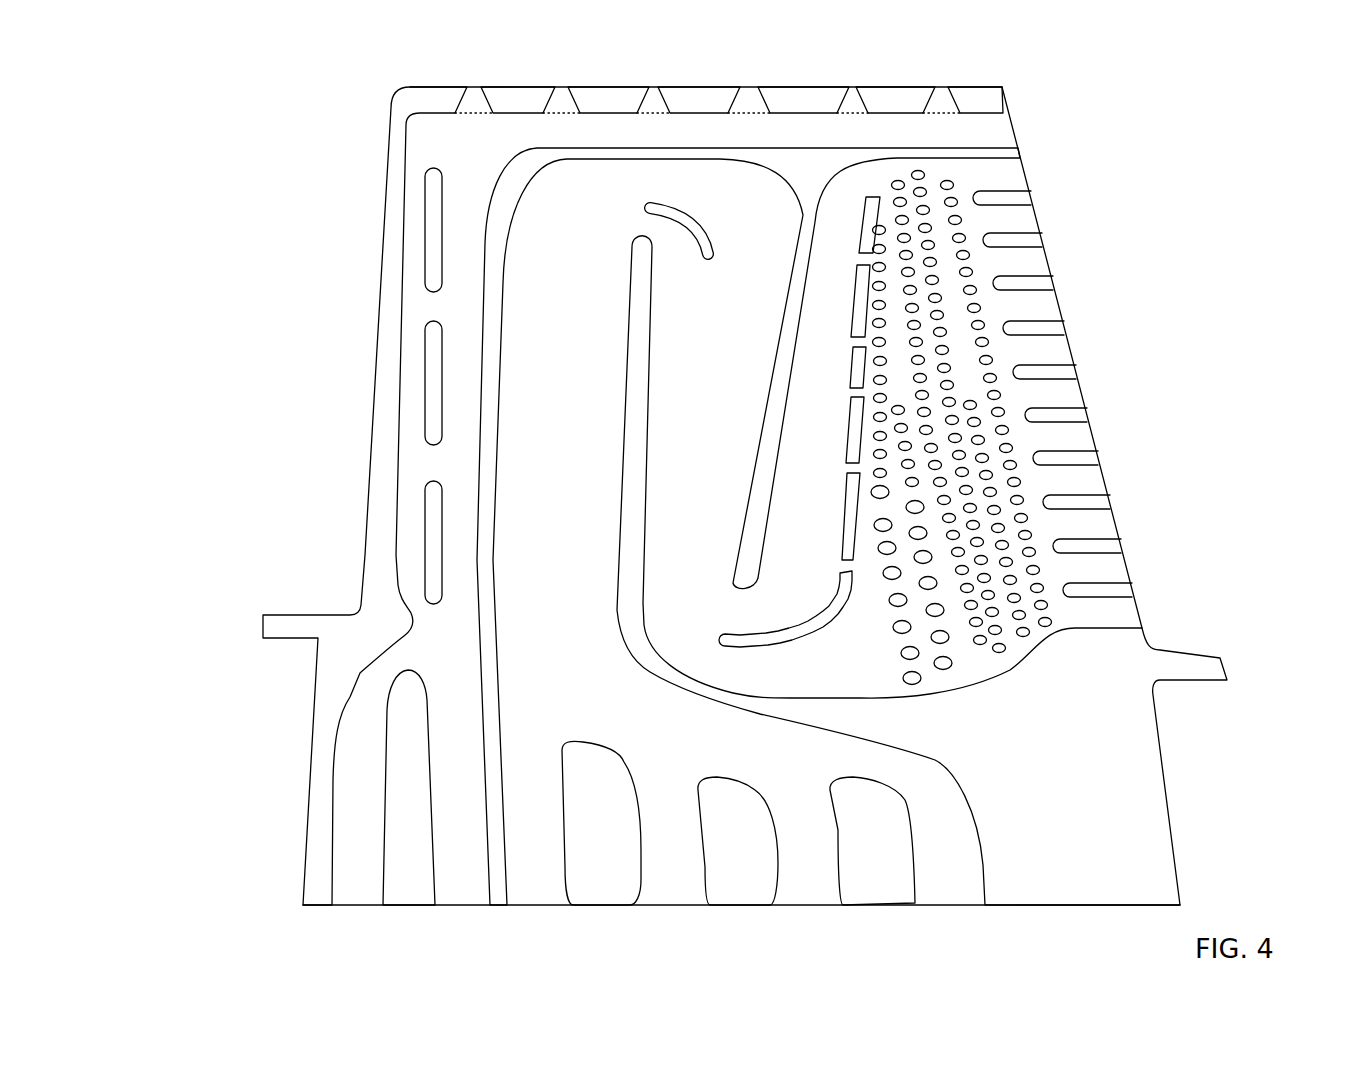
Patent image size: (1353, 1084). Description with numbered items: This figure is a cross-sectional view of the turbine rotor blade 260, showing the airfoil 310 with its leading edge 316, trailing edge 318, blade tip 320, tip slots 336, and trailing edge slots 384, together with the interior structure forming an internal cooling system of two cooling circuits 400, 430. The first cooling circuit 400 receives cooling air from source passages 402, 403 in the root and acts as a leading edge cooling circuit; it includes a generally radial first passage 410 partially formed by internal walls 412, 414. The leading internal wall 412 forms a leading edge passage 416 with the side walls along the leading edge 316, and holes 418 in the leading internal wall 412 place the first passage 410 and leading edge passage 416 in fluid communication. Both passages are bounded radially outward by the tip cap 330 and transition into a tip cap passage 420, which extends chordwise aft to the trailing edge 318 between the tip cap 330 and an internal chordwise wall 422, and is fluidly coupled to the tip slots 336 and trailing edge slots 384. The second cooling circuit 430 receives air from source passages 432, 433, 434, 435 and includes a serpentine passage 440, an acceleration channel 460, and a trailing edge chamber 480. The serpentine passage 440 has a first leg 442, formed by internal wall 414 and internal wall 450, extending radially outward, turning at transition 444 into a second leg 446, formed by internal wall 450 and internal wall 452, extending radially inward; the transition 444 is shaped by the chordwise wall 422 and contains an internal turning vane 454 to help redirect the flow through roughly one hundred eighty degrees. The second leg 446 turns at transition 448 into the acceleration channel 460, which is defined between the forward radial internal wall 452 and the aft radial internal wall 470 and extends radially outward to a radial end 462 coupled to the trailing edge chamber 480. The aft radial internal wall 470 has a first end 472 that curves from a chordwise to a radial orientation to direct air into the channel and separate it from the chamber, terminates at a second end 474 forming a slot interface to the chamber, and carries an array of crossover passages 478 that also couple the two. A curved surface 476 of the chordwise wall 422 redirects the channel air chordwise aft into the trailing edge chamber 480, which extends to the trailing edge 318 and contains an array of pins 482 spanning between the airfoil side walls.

The rotor blade 260 is at (168, 223).
The airfoil 310 is at (375, 373).
The leading edge 316 is at (385, 210).
The trailing edge 318 is at (1022, 196).
The blade tip 320 is at (523, 88).
The tip cap 330 is at (468, 118).
The tip slots 336 is at (656, 103).
The trailing edge slots 384 is at (1025, 217).
The first cooling circuit 400 is at (397, 512).
The source passage 402 is at (349, 900).
The source passage 403 is at (458, 900).
The first passage 410 is at (466, 178).
The leading internal wall 412 is at (433, 603).
The internal wall 414 is at (475, 502).
The leading edge passage 416 is at (407, 290).
The holes 418 is at (435, 305).
The tip cap passage 420 is at (537, 143).
The internal chordwise wall 422 is at (790, 147).
The second cooling circuit 430 is at (694, 207).
The source passage 432 is at (537, 900).
The source passage 433 is at (677, 900).
The source passage 434 is at (813, 900).
The source passage 435 is at (957, 900).
The serpentine passage 440 is at (571, 596).
The first leg 442 is at (514, 345).
The transition 444 is at (578, 237).
The second leg 446 is at (659, 508).
The transition 448 is at (688, 644).
The internal wall 450 is at (630, 289).
The internal wall 452 is at (792, 281).
The internal turning vane 454 is at (662, 203).
The acceleration channel 460 is at (798, 457).
The radial end 462 is at (845, 182).
The aft radial internal wall 470 is at (853, 298).
The first end 472 is at (718, 646).
The second end 474 is at (878, 195).
The curved surface 476 is at (862, 172).
The crossover passages 478 is at (852, 465).
The trailing edge chamber 480 is at (962, 425).
The pins 482 is at (987, 675).